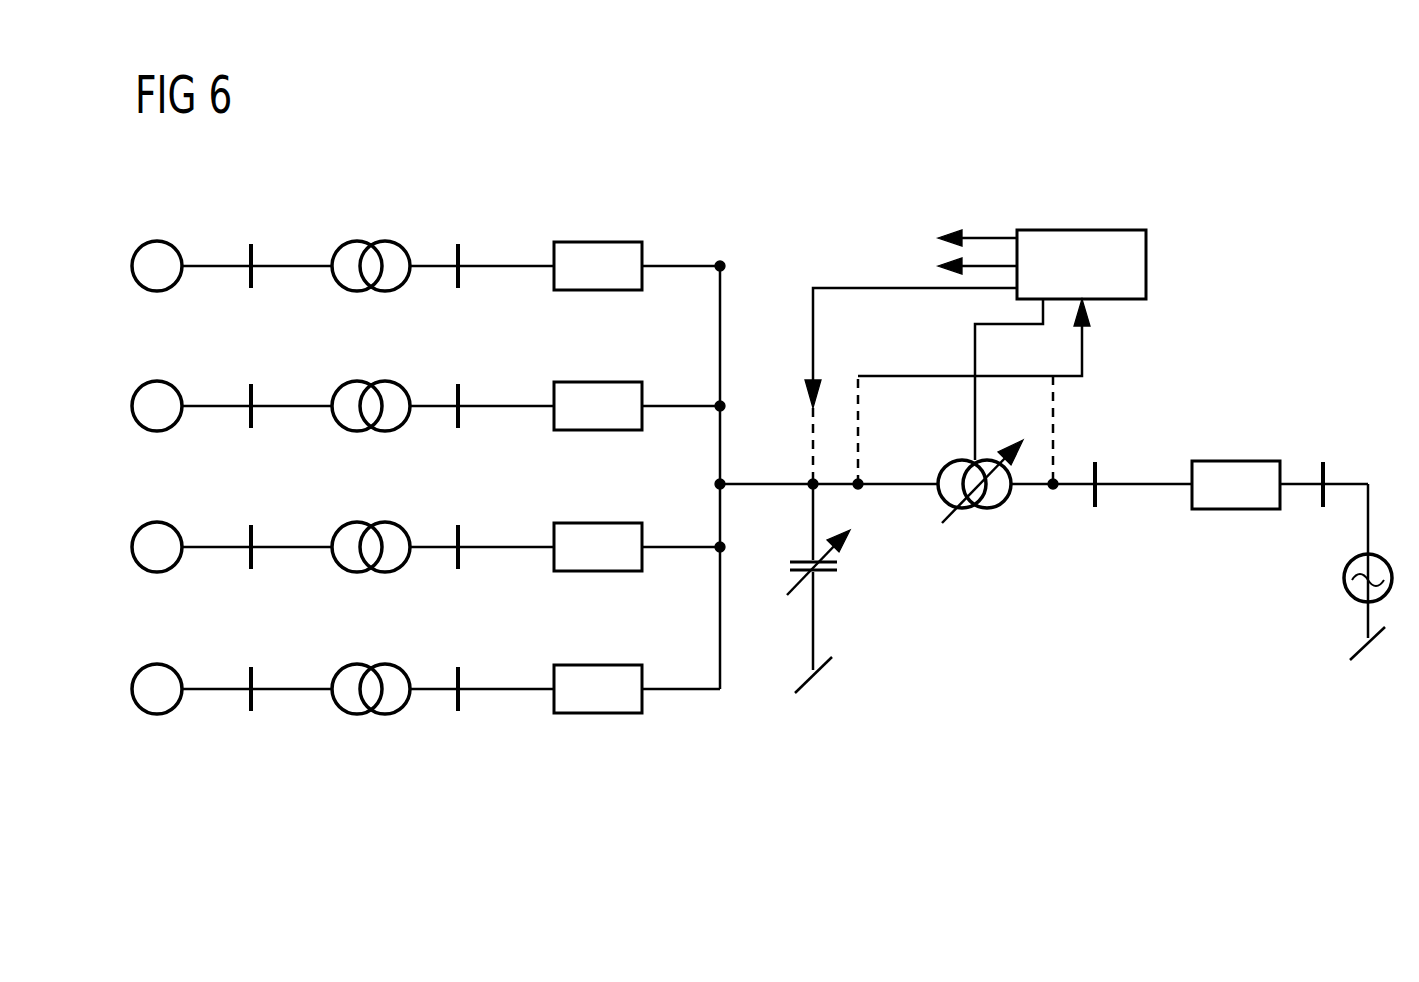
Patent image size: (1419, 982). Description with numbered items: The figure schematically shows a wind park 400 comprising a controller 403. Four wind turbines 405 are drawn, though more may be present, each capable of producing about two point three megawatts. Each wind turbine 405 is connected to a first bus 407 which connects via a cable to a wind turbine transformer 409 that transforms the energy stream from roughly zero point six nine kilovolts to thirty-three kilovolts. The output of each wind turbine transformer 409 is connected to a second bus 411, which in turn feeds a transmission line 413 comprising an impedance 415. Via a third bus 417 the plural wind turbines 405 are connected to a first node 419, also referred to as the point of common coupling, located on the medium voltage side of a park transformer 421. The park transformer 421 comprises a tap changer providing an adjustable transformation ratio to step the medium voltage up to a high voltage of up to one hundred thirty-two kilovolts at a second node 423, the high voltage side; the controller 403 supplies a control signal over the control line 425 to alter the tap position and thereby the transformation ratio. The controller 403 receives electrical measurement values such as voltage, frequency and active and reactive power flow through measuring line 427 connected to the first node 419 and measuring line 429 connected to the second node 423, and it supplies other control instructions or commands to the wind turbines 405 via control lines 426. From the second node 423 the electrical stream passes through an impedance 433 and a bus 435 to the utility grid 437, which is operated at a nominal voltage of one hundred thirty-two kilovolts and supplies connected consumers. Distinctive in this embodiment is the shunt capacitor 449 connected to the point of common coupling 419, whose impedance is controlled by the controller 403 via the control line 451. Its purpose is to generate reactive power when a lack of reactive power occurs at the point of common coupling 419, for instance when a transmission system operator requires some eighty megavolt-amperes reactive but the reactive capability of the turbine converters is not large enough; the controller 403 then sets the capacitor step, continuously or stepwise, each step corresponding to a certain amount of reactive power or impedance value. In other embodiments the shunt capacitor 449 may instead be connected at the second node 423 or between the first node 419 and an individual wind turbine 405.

The wind park 400 is at (1298, 184).
The controller 403 is at (1082, 230).
The wind turbine 405 is at (157, 241).
The first bus 407 is at (253, 246).
The wind turbine transformer 409 is at (364, 241).
The second bus 411 is at (460, 246).
The transmission line 413 is at (648, 221).
The impedance 415 is at (598, 242).
The third bus 417 is at (722, 262).
The point of common coupling 419 is at (722, 487).
The park transformer 421 is at (985, 512).
The second node 423 is at (1097, 464).
The control line 425 is at (975, 345).
The control lines 426 is at (992, 263).
The measuring line 427 is at (917, 378).
The measuring line 429 is at (1055, 415).
The impedance 433 is at (1235, 461).
The bus 435 is at (1325, 464).
The utility grid 437 is at (1344, 578).
The shunt capacitor 449 is at (815, 620).
The control line 451 is at (870, 288).